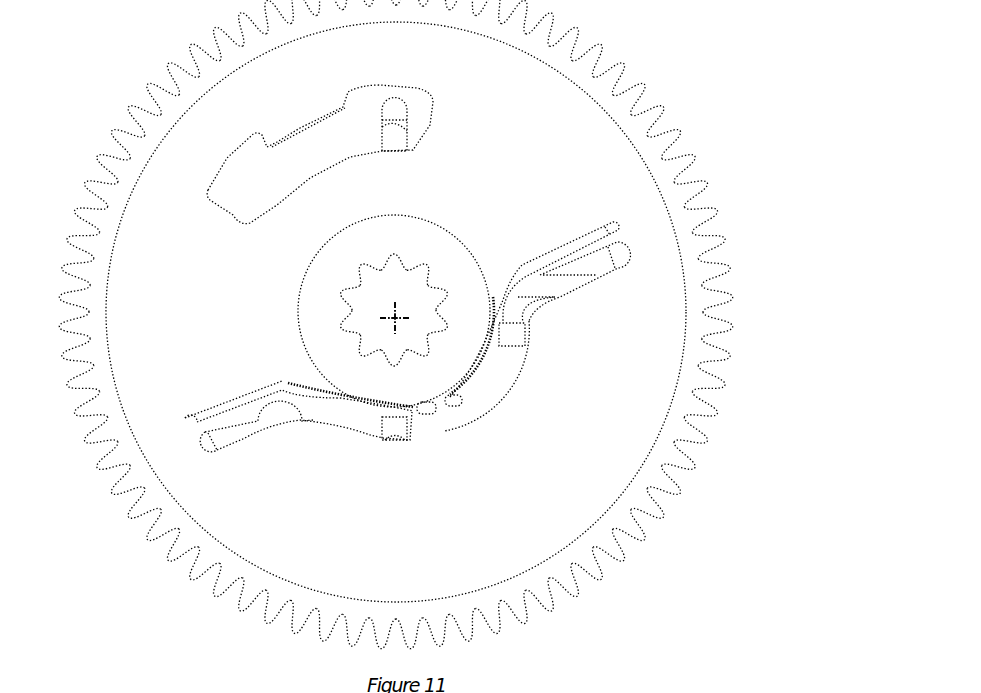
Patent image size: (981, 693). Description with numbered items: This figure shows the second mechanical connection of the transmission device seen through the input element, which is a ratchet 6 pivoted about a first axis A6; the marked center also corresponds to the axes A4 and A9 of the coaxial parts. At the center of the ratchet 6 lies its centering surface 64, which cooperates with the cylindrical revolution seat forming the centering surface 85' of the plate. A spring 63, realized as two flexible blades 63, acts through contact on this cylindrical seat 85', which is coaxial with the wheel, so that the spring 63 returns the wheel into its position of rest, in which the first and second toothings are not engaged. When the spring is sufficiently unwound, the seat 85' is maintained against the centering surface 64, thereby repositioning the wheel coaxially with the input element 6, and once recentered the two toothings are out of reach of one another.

The ratchet 6 is at (172, 110).
The centering surface 64 is at (301, 316).
The centering surface 85' is at (347, 355).
The spring 63 is at (414, 424).
The axis of rotation A4 is at (400, 316).
The first axis A6 is at (395, 318).
The axis of rotation A9 is at (395, 318).